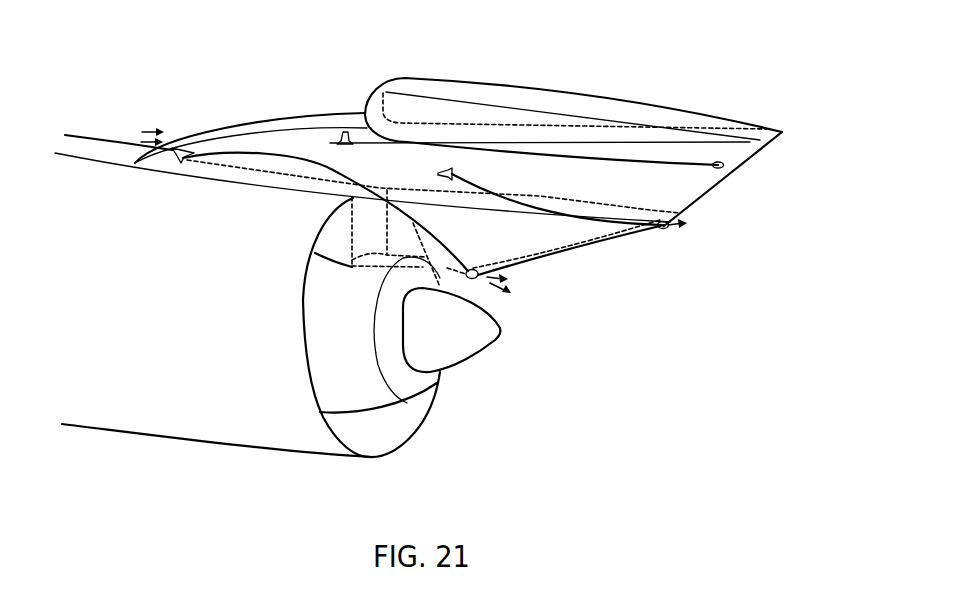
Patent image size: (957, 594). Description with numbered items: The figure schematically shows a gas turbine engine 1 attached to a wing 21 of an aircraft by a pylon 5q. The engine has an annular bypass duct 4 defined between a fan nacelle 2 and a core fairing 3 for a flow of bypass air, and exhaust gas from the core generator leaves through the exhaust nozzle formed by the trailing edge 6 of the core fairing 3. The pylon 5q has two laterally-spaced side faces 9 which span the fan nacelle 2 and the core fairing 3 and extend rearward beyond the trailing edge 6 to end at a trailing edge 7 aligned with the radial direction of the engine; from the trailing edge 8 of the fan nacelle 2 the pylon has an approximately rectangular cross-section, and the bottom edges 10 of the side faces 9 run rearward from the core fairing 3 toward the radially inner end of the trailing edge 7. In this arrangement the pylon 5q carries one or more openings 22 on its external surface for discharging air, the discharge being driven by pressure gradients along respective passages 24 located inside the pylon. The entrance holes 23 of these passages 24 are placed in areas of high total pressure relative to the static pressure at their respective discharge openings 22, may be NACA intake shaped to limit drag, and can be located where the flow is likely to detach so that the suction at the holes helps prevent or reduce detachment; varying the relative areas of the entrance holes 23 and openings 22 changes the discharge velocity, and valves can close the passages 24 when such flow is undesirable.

The gas turbine engine 1 is at (225, 92).
The fan nacelle 2 is at (221, 418).
The core fairing 3 is at (354, 390).
The annular bypass duct 4 is at (356, 352).
The pylon 5q is at (346, 94).
The trailing edge of the core fairing 6 is at (405, 403).
The trailing edge of the pylon 7 is at (708, 198).
The trailing edge of the fan nacelle 8 is at (306, 378).
The side faces 9 is at (610, 242).
The bottom edges of the side faces 10 is at (544, 264).
The wing 21 is at (480, 110).
The openings 22 is at (724, 167).
The entrance holes 23 is at (180, 148).
The passages 24 is at (651, 225).